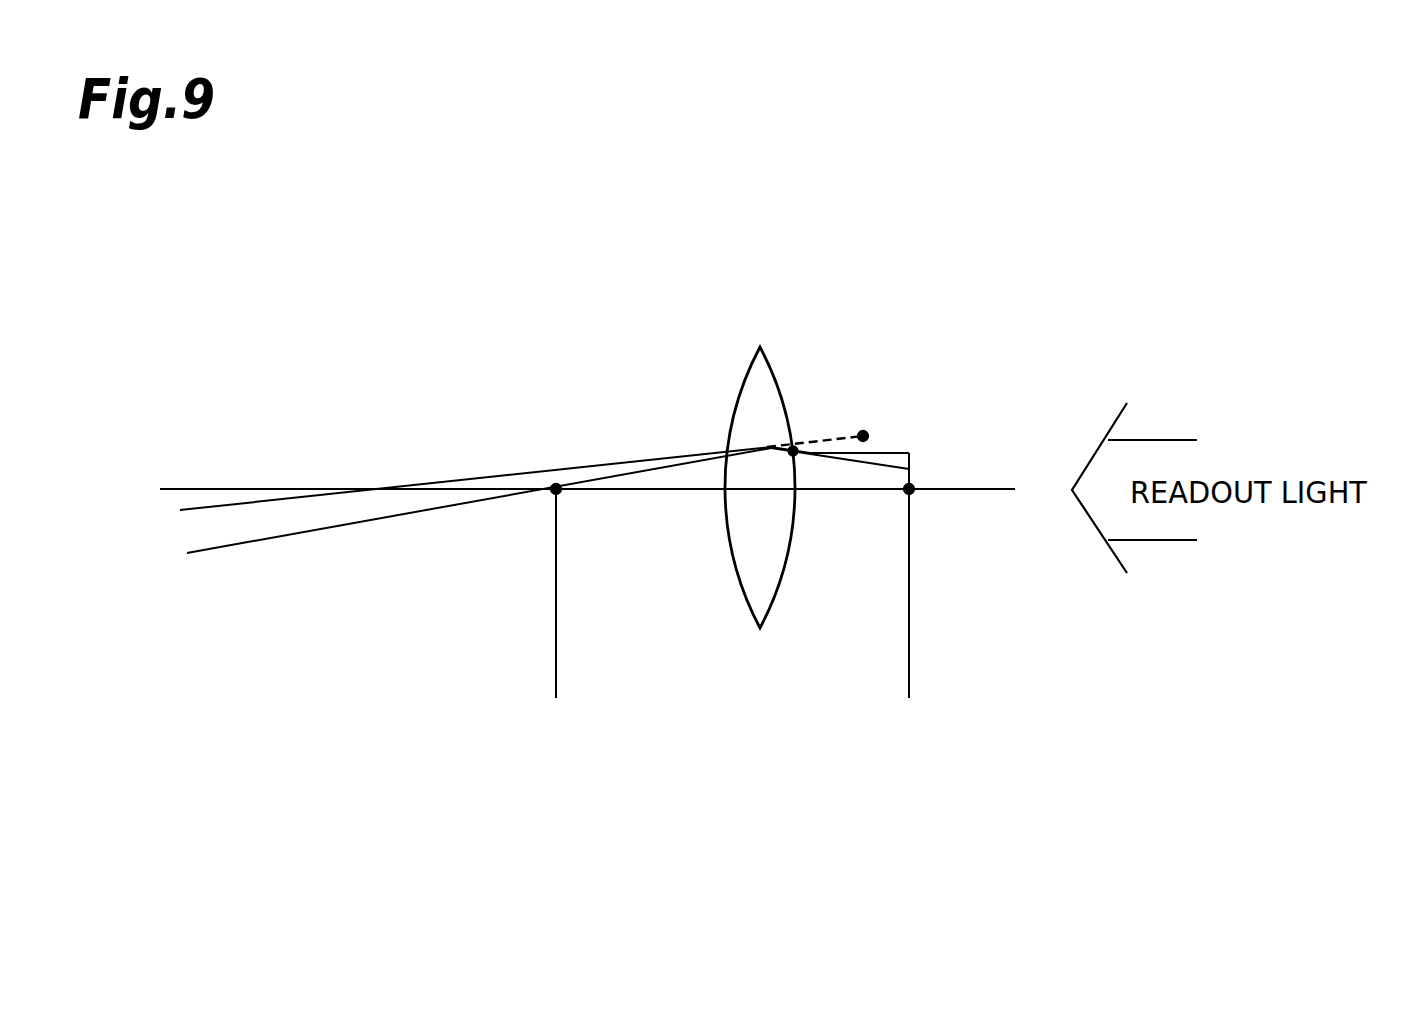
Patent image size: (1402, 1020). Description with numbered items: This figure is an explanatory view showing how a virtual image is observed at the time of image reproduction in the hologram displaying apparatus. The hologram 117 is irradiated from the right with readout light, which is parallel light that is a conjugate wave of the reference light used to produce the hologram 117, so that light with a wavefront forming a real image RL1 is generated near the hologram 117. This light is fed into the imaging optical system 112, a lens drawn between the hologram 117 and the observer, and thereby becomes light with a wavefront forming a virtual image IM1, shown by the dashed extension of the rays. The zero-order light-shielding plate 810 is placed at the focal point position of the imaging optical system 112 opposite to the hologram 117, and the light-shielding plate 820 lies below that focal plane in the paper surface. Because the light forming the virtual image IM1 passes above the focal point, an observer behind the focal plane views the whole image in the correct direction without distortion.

The imaging optical system 112 is at (750, 367).
The hologram 117 is at (909, 657).
The zero-order light-shielding plate 810 is at (556, 484).
The light-shielding plate 820 is at (556, 668).
The virtual image IM1 is at (863, 431).
The real image RL1 is at (810, 453).